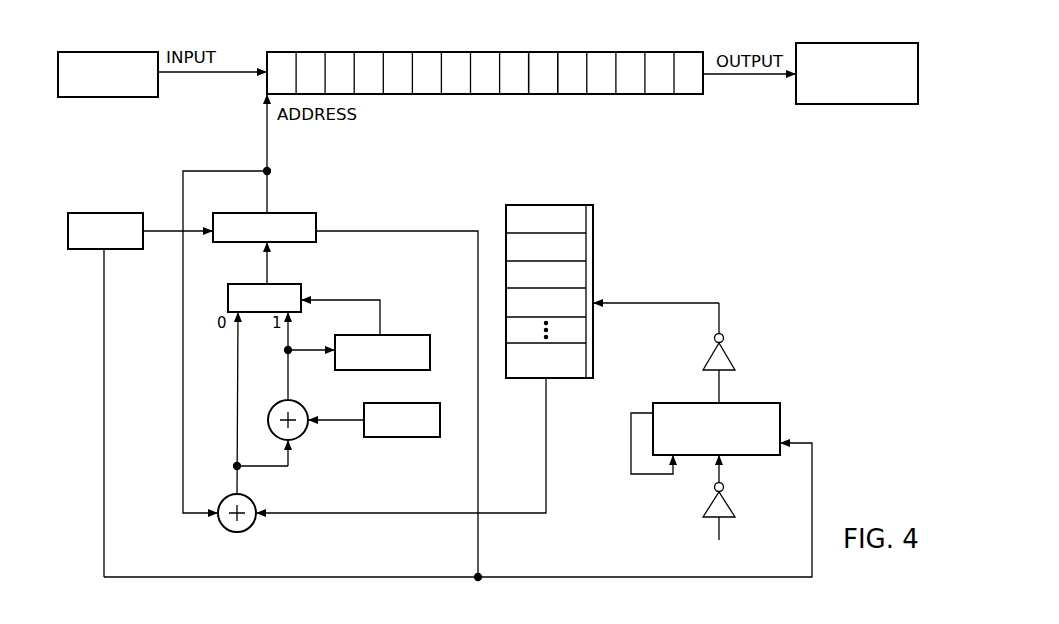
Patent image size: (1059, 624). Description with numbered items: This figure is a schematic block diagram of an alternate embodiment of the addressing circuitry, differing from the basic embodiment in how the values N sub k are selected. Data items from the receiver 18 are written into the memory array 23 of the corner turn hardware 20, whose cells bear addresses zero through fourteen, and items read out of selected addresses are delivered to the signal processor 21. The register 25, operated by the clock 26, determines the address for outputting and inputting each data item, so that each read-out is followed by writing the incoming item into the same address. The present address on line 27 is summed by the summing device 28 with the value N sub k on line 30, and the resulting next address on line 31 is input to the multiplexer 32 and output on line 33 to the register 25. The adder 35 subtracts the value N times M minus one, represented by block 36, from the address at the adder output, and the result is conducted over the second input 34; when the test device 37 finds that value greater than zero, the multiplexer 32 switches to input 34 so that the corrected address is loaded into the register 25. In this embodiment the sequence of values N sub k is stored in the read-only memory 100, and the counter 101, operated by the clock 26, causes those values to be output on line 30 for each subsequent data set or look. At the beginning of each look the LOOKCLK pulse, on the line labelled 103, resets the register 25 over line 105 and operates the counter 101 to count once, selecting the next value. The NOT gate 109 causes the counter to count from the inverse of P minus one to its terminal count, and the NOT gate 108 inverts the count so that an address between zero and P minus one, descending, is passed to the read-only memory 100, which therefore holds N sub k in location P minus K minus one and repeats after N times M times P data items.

The receiver 18 is at (95, 97).
The corner turn hardware 20 is at (437, 26).
The memory array 23 is at (536, 52).
The signal processor 21 is at (859, 104).
The clock 26 is at (82, 213).
The register 25 is at (297, 213).
The line 27 is at (183, 468).
The line 33 is at (263, 262).
The multiplexer 32 is at (291, 284).
The test device 37 is at (417, 322).
The second input 34 is at (286, 383).
The line 31 is at (236, 394).
The adder 35 is at (277, 409).
The block 36 is at (418, 403).
The summing device 28 is at (230, 498).
The line 30 is at (326, 513).
The line 105 is at (477, 446).
The read-only memory 100 is at (604, 195).
The NOT gate 108 is at (727, 341).
The counter 101 is at (782, 413).
The NOT gate 109 is at (729, 501).
The LOOKCLK line 103 is at (642, 577).